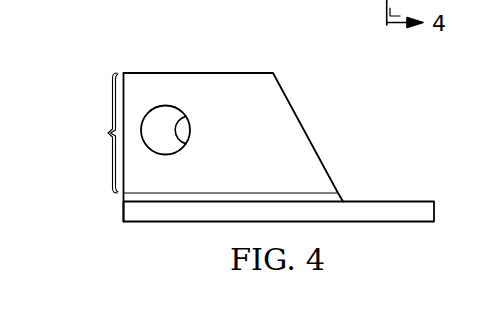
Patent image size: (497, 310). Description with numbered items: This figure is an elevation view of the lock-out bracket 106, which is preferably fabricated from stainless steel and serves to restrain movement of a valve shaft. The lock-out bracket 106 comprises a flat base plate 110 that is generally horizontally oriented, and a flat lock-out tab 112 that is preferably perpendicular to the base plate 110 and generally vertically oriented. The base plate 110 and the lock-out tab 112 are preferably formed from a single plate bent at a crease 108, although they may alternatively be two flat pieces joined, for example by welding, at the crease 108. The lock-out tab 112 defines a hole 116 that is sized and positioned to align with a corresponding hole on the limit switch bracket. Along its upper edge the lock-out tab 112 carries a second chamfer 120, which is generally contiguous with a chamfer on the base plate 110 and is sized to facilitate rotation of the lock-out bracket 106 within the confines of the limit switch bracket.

The lock-out bracket 106 is at (190, 47).
The crease 108 is at (130, 194).
The base plate 110 is at (403, 202).
The lock-out tab 112 is at (91, 133).
The hole 116 is at (190, 145).
The second chamfer 120 is at (302, 123).